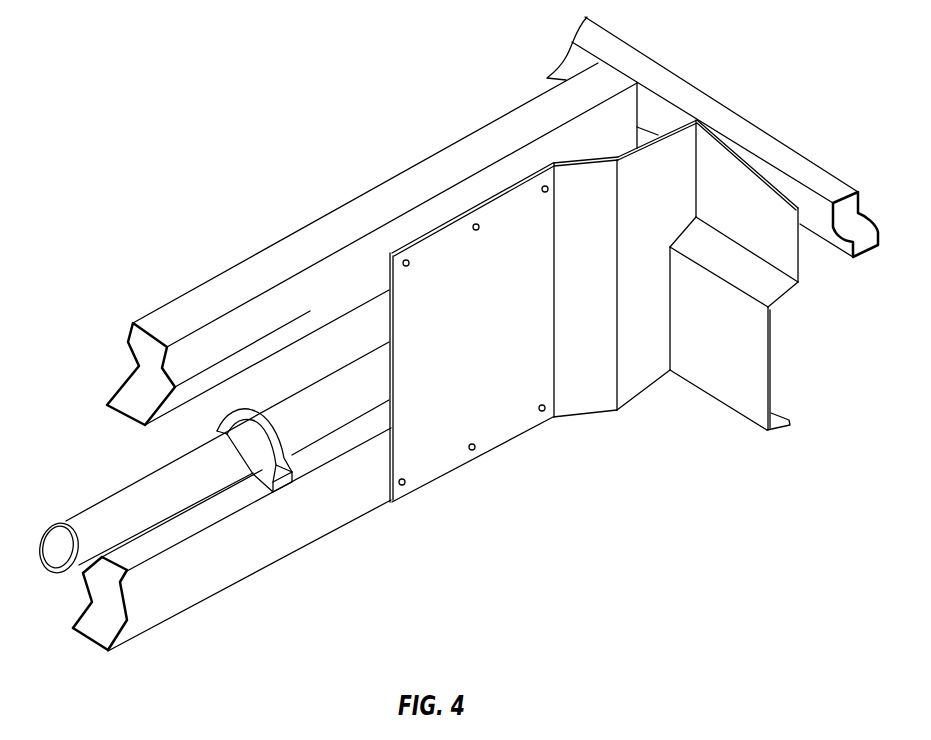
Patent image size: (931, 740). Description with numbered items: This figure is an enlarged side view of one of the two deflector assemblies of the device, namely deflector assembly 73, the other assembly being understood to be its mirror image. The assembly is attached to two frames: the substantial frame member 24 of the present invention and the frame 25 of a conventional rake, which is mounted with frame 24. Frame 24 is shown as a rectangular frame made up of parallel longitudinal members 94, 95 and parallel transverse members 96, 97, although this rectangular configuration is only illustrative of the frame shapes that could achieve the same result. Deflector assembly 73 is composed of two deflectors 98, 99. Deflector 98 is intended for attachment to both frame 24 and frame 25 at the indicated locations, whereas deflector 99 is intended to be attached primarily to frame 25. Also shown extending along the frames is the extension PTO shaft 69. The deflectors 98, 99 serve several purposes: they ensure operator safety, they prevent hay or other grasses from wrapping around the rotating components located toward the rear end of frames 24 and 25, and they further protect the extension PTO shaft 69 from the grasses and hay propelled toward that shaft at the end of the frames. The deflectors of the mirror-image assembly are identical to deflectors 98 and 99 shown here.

The deflector assembly 73 is at (660, 471).
The frame 25 is at (372, 195).
The frame member 24 is at (206, 539).
The extension PTO shaft 69 is at (143, 482).
The transverse member 96 is at (103, 556).
The longitudinal member 94 is at (125, 590).
The longitudinal member 95 is at (85, 592).
The transverse member 97 is at (90, 640).
The deflector 98 is at (450, 460).
The deflector 99 is at (763, 360).